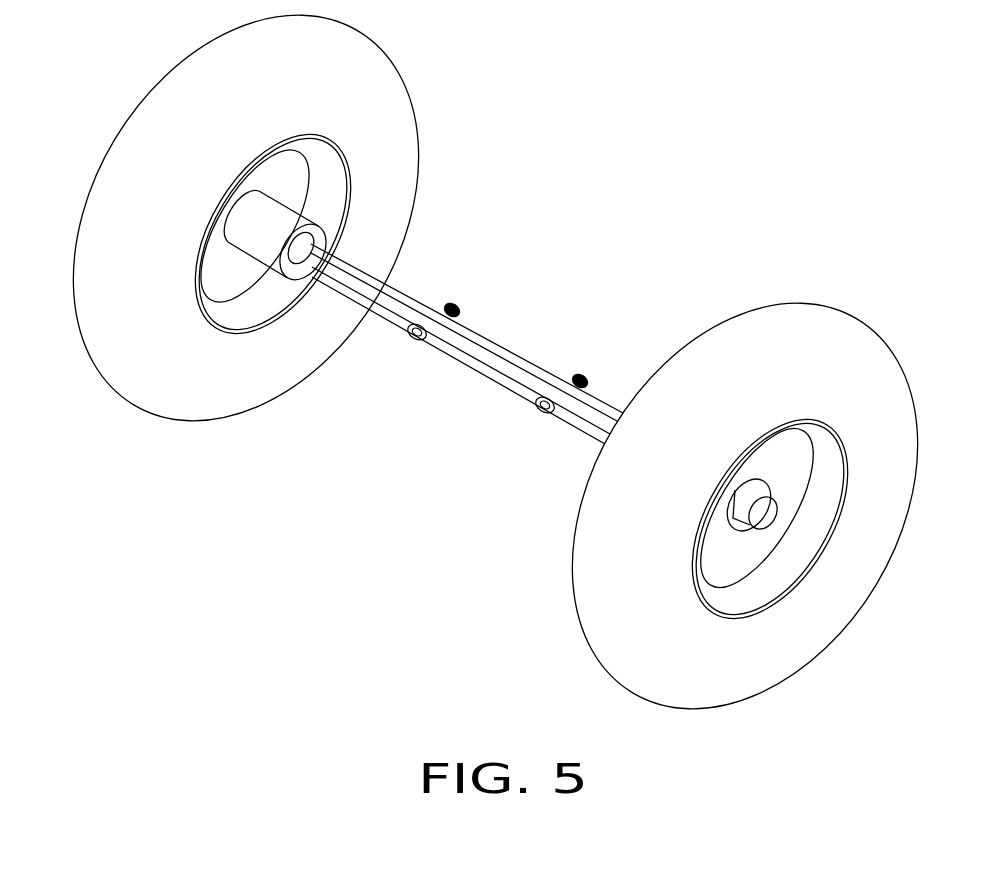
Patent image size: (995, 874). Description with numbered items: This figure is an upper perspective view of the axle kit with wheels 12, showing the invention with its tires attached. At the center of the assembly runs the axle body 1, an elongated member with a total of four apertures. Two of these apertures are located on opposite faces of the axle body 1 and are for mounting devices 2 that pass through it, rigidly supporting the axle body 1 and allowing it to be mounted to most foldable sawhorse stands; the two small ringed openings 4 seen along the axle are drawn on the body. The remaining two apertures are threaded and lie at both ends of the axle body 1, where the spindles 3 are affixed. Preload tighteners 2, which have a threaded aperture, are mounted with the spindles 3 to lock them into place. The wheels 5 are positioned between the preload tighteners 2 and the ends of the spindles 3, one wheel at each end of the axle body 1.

The axle body 1 is at (500, 353).
The preload tightener 2 is at (309, 248).
The spindle 3 is at (760, 515).
The axle holes 4 is at (422, 340).
The wheel 5 is at (348, 88).
The axle kit with wheels 12 is at (578, 183).